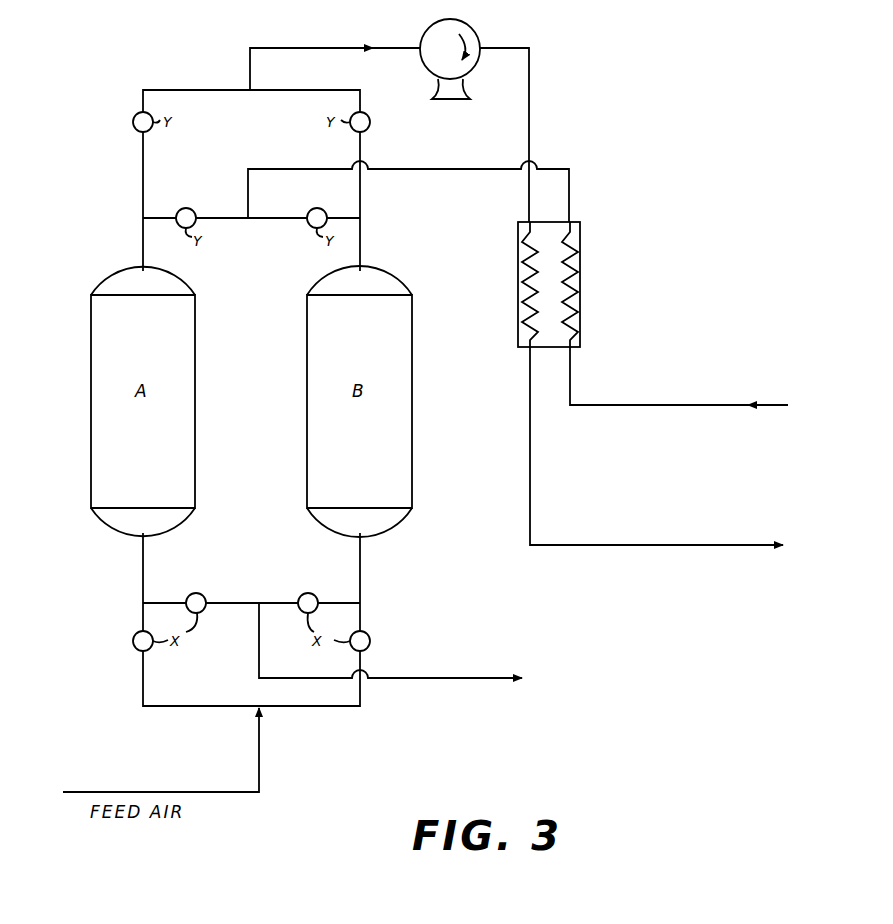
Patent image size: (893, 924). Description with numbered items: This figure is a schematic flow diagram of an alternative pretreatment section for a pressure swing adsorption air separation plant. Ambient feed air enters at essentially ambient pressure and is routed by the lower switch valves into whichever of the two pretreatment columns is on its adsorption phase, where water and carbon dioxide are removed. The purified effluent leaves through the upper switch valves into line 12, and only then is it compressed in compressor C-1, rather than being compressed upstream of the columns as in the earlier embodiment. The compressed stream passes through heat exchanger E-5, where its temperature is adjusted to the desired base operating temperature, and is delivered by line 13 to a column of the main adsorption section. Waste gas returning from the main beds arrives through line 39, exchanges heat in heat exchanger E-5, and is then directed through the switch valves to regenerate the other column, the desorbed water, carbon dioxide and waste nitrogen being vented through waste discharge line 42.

The line 12 is at (340, 46).
The conduit to PSA unit 13 is at (532, 483).
The line 39 is at (572, 376).
The waste discharge line 42 is at (400, 678).
The compressor C-1 is at (470, 24).
The heat exchanger E-5 is at (580, 248).